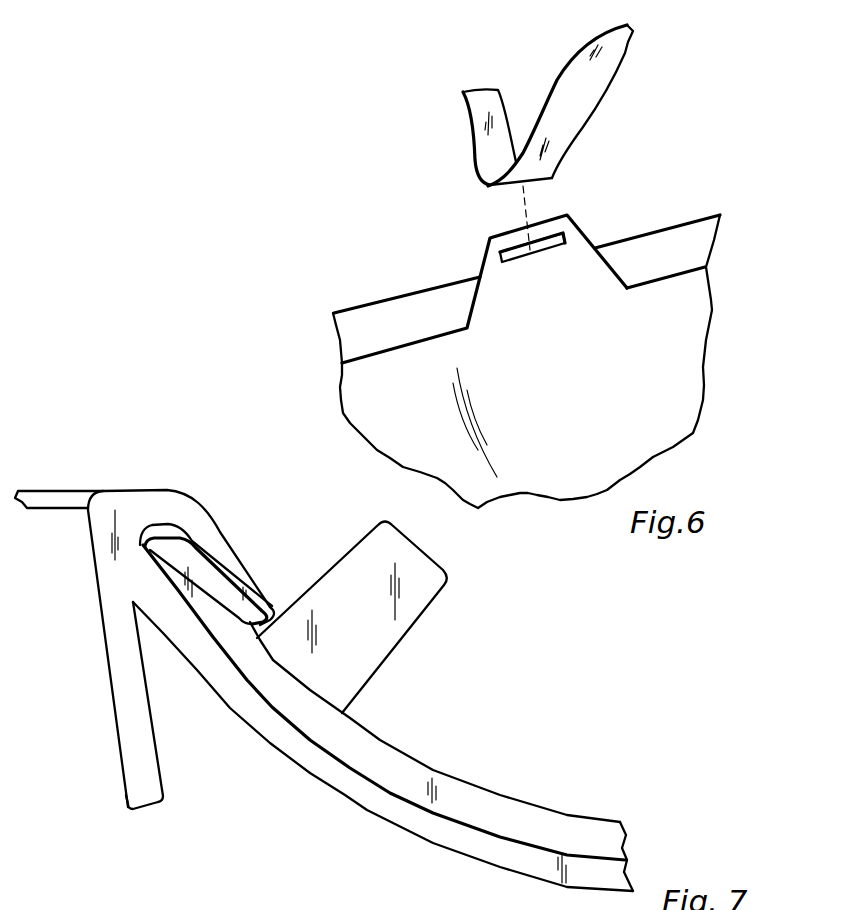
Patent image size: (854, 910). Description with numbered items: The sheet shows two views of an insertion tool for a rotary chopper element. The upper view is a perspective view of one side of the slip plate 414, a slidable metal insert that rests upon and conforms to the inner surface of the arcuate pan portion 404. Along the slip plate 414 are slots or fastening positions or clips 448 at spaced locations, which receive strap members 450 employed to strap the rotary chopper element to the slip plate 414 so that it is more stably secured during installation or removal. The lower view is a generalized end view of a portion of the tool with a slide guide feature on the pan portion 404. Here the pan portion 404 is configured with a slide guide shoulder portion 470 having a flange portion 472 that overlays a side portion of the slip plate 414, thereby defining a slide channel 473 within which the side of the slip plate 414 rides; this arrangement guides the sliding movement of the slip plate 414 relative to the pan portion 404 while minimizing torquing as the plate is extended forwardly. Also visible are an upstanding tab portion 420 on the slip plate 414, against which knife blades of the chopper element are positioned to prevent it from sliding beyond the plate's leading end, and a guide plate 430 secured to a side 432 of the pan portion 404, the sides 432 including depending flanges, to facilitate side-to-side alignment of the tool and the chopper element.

In FIG. 6, the pan portion 404 is at (427, 317).
In FIG. 7, the pan portion 404 is at (297, 750).
In FIG. 6, the slip plate 414 is at (663, 353).
In FIG. 7, the slip plate 414 is at (373, 747).
In FIG. 7, the upstanding tab portions 420 is at (428, 603).
In FIG. 7, the positioning or guide plates 430 is at (58, 495).
In FIG. 7, the sides of the pan portion 432 is at (127, 693).
In FIG. 6, the slots or fastening positions or clips 448 is at (585, 226).
In FIG. 6, the strap members 450 is at (552, 92).
In FIG. 7, the slide guide shoulder portion 470 is at (137, 485).
In FIG. 7, the flange portion 472 is at (217, 543).
In FIG. 7, the slide channel 473 is at (142, 538).